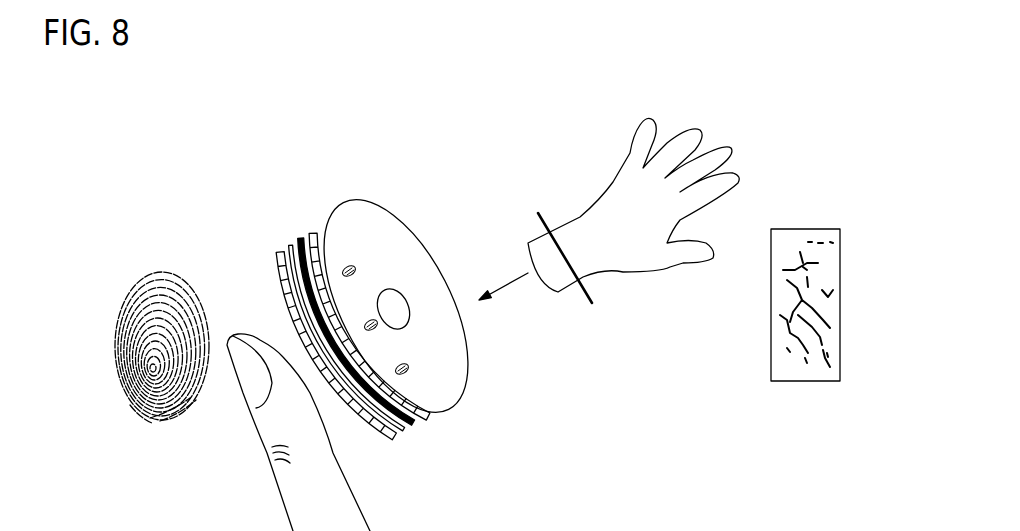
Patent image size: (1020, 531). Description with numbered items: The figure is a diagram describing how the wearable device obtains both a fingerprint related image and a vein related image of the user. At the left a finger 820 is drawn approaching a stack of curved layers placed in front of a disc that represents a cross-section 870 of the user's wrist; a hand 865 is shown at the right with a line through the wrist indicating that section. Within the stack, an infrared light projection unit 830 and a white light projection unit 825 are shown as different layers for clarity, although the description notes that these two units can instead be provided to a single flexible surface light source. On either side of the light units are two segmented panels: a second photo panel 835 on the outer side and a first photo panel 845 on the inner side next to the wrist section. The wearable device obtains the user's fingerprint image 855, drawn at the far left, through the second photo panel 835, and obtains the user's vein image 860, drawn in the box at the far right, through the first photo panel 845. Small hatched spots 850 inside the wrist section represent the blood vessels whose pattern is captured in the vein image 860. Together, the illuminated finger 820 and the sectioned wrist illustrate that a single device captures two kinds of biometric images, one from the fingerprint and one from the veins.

The finger 820 is at (278, 493).
The white light projection unit 825 is at (406, 445).
The infrared light projection unit 830 is at (423, 436).
The second photo panel 835 is at (281, 238).
The first photo panel 845 is at (314, 220).
The blood vessel cross-section 850 is at (364, 252).
The fingerprint image 855 is at (153, 272).
The vein image 860 is at (771, 341).
The hand 865 is at (590, 202).
The wrist cross-section plane 870 is at (461, 339).